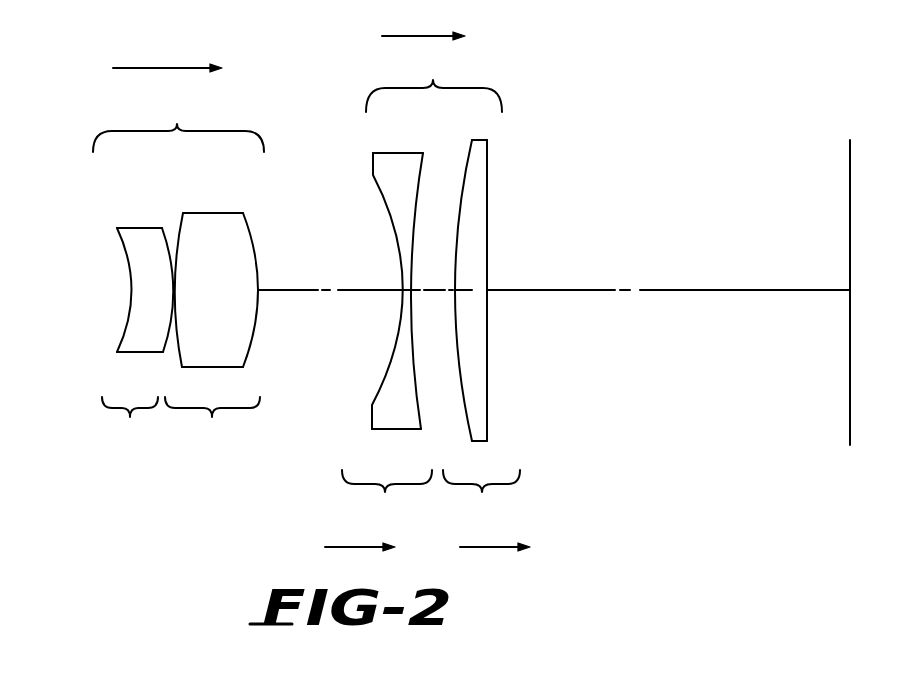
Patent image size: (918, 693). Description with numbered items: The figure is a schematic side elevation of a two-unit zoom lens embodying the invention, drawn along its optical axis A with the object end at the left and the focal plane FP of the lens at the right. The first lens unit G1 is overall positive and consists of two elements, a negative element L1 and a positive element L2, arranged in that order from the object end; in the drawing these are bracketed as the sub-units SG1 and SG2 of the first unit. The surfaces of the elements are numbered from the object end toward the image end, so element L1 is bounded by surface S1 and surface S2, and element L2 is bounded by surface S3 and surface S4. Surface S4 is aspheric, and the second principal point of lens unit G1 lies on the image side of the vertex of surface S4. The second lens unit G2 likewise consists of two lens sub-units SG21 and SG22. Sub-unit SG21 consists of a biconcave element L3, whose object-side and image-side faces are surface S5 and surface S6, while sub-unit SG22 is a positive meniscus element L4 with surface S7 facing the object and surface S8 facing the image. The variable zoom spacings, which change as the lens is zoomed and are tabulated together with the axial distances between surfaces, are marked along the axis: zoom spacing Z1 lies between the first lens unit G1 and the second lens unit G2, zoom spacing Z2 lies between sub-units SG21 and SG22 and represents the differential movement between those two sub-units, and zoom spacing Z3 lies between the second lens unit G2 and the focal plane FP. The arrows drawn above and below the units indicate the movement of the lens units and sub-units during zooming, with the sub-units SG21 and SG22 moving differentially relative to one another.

The first lens unit G1 is at (190, 272).
The second lens unit G2 is at (443, 287).
The lens sub-unit SG1 is at (119, 310).
The lens sub-unit SG2 is at (231, 306).
The lens sub-unit SG21 is at (399, 312).
The lens sub-unit SG22 is at (482, 311).
The lens element L1 is at (138, 227).
The lens element L2 is at (217, 212).
The biconcave element L3 is at (396, 156).
The positive meniscus element L4 is at (483, 140).
The surface S1 is at (127, 315).
The surface S2 is at (166, 344).
The surface S3 is at (178, 348).
The surface S4 is at (259, 327).
The surface S5 is at (393, 352).
The surface S6 is at (412, 370).
The surface S7 is at (456, 338).
The surface S8 is at (488, 371).
The variable zoom spacing Z1 is at (331, 277).
The variable zoom spacing Z2 is at (437, 277).
The variable zoom spacing Z3 is at (593, 277).
The optical axis A is at (778, 291).
The focal plane FP is at (851, 272).